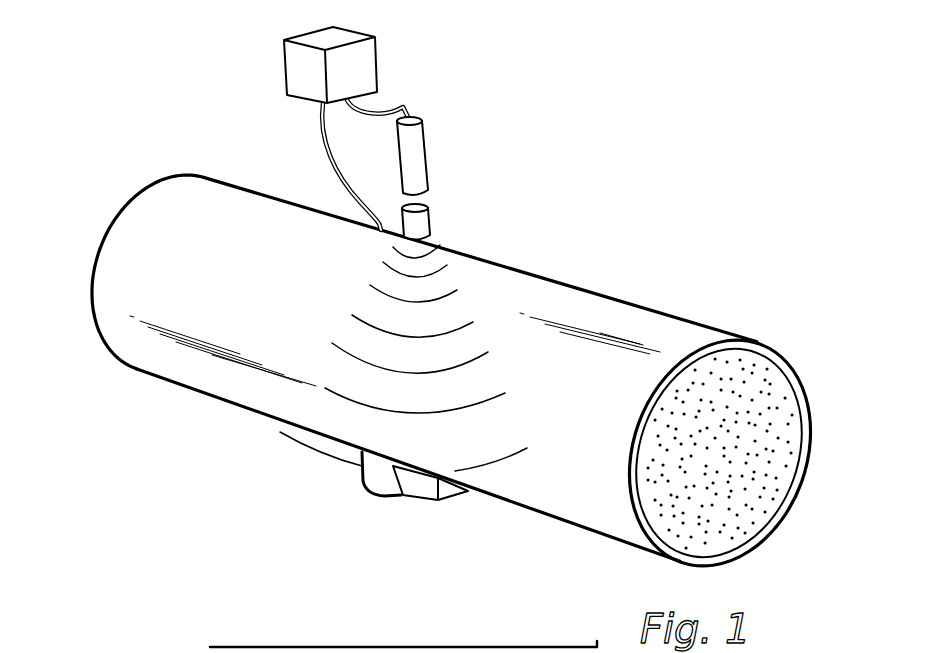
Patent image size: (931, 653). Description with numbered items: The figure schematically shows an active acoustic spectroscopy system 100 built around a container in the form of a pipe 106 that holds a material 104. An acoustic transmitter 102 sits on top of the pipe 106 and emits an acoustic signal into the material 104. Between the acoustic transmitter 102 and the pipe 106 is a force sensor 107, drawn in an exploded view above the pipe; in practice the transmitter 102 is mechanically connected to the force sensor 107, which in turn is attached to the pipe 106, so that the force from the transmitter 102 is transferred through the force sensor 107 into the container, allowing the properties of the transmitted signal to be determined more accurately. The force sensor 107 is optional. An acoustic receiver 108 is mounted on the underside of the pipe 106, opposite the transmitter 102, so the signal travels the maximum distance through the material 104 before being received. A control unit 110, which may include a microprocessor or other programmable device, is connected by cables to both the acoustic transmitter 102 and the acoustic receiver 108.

The active acoustic spectroscopy system 100 is at (117, 82).
The acoustic transmitter 102 is at (420, 157).
The material 104 is at (745, 395).
The pipe 106 is at (590, 302).
The force sensor 107 is at (422, 224).
The acoustic receiver 108 is at (421, 497).
The control unit 110 is at (298, 77).